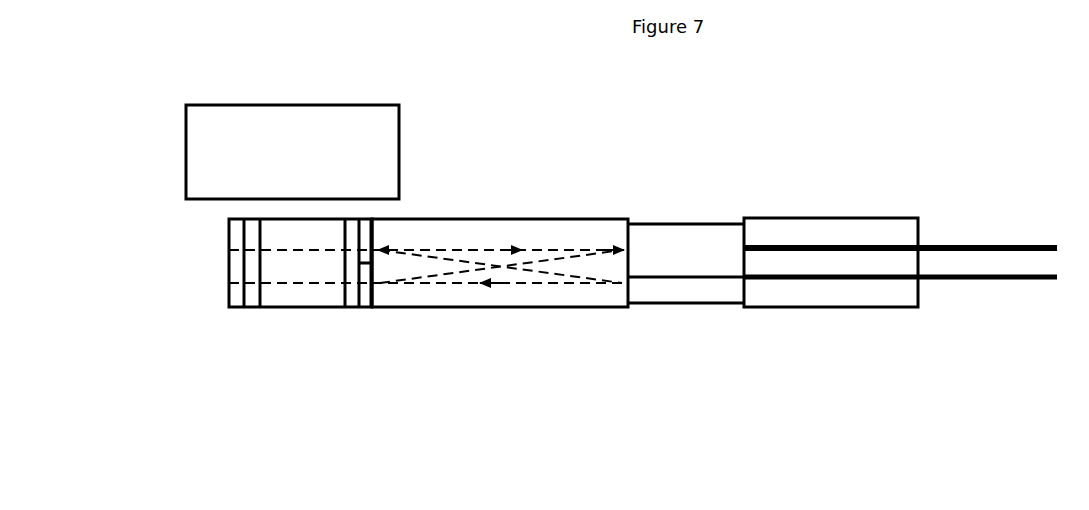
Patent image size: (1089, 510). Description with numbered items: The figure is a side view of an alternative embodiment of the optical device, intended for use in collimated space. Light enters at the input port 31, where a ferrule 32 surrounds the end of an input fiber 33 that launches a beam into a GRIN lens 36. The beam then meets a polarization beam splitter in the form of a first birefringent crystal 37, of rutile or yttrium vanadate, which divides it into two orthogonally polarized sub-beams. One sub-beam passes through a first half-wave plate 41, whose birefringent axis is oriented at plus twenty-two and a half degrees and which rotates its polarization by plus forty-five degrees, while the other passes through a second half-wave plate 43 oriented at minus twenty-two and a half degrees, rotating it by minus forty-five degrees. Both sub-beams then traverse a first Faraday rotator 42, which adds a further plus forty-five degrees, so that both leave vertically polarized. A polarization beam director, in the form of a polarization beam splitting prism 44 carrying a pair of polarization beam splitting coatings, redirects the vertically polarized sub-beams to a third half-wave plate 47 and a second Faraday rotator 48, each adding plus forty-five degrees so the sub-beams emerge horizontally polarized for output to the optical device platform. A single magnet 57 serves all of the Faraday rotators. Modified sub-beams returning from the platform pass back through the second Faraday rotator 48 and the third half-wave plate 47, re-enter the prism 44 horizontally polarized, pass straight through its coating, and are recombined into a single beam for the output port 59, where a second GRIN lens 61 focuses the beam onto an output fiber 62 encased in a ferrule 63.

The single magnet 57 is at (196, 130).
The second Faraday rotator 48 is at (229, 267).
The third half-wave plate 47 is at (244, 302).
The polarization beam splitting prism 44 is at (312, 300).
The first Faraday rotator 42 is at (349, 300).
The first half-wave plate 41 is at (366, 303).
The second half-wave plate 43 is at (367, 222).
The first birefringent crystal 37 is at (512, 300).
The GRIN lens 36 is at (663, 303).
The second GRIN lens 61 is at (680, 235).
The output port 59 is at (714, 160).
The ferrule 32 is at (797, 302).
The ferrule 63 is at (849, 235).
The output fiber 62 is at (1000, 245).
The input fiber 33 is at (948, 283).
The input port 31 is at (748, 336).